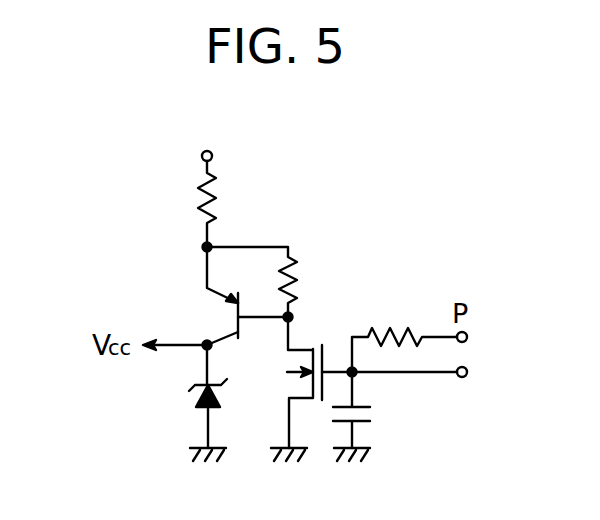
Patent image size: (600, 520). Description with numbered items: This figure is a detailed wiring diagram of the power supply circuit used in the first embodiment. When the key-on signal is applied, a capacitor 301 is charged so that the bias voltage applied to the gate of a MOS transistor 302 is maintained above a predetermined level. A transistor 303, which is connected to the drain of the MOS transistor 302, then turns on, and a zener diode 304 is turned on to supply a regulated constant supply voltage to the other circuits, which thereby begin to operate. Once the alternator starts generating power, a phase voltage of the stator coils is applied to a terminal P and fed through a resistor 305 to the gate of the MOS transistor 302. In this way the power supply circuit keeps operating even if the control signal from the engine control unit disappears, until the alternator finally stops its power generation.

The capacitor 301 is at (373, 412).
The MOS transistor 302 is at (322, 348).
The transistor 303 is at (203, 304).
The zener diode 304 is at (194, 394).
The resistor 305 is at (398, 332).